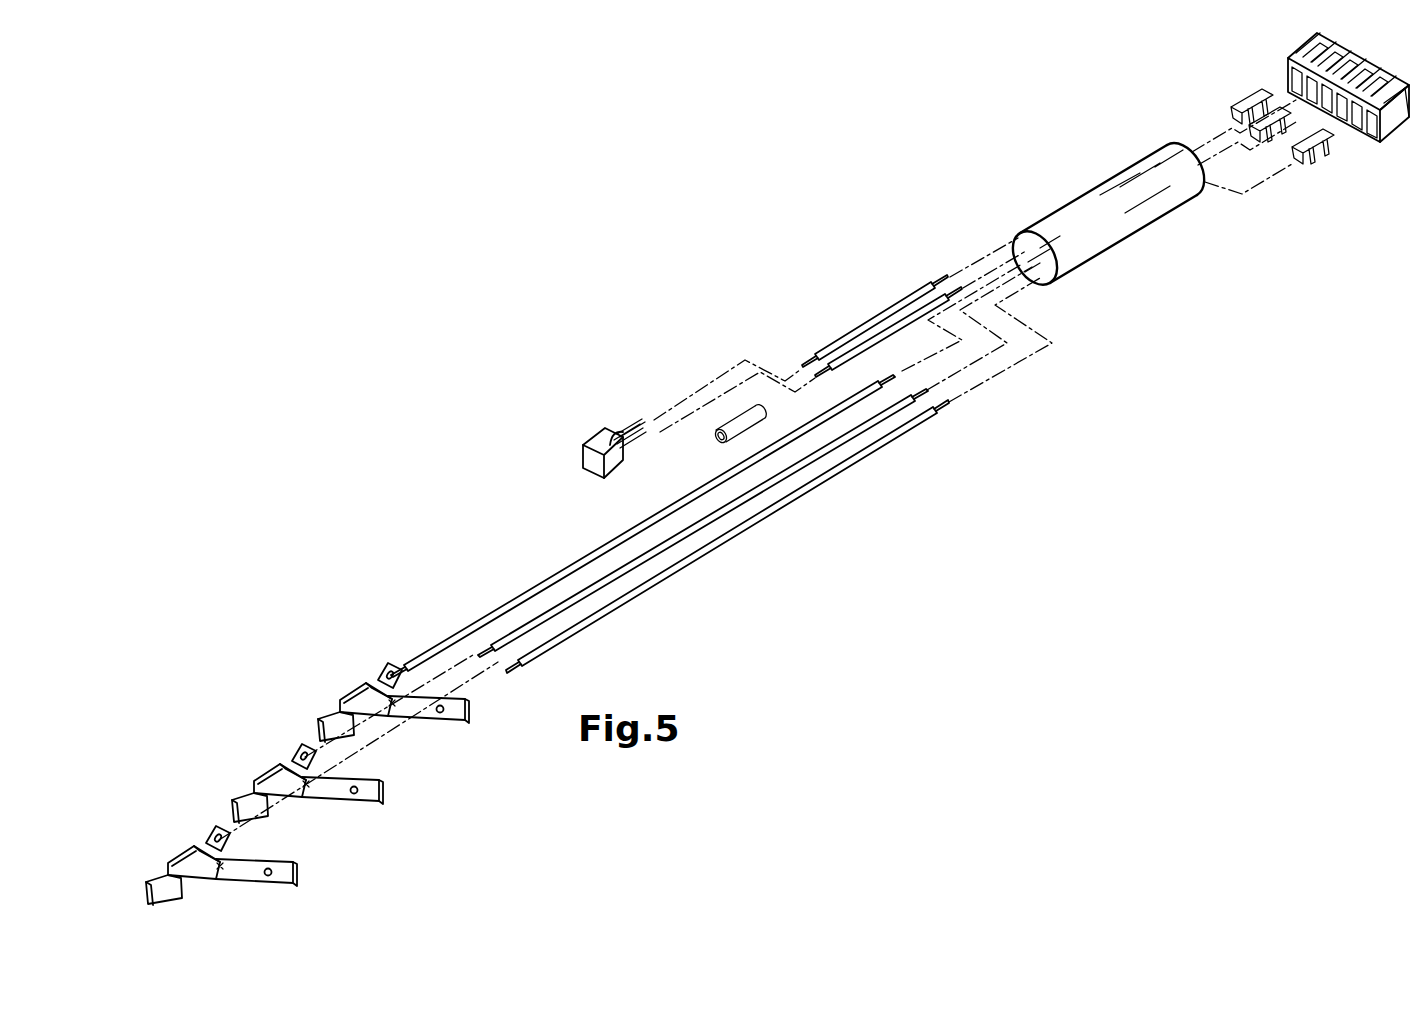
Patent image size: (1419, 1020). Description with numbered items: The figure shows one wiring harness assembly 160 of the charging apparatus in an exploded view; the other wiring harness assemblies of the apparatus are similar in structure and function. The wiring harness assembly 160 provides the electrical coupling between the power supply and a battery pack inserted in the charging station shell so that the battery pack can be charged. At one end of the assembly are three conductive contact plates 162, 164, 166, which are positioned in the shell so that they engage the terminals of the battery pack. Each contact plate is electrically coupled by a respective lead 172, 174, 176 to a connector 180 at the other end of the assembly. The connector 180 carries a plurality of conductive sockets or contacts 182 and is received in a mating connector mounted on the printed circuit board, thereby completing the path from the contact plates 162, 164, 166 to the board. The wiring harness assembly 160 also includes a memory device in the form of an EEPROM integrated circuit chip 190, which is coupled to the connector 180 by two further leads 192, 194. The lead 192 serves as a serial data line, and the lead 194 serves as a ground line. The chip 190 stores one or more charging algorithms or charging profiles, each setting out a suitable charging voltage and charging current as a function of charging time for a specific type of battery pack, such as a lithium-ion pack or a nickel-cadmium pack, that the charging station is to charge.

The wiring harness assembly 160 is at (930, 205).
The conductive contact plate 162 is at (353, 685).
The conductive contact plate 164 is at (275, 768).
The conductive contact plate 166 is at (180, 850).
The lead 172 is at (635, 588).
The lead 174 is at (653, 547).
The lead 176 is at (610, 547).
The connector 180 is at (1397, 125).
The conductive sockets or contacts 182 is at (1332, 155).
The EEPROM integrated circuit chip 190 is at (603, 440).
The lead 192 is at (863, 328).
The lead 194 is at (895, 312).